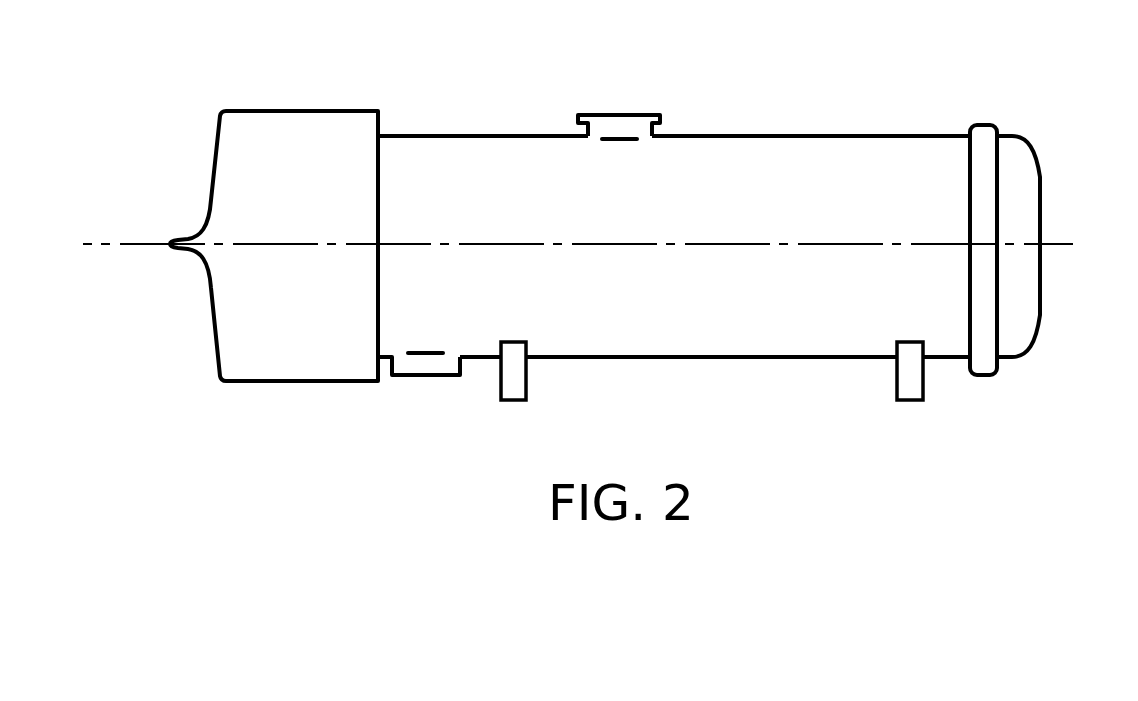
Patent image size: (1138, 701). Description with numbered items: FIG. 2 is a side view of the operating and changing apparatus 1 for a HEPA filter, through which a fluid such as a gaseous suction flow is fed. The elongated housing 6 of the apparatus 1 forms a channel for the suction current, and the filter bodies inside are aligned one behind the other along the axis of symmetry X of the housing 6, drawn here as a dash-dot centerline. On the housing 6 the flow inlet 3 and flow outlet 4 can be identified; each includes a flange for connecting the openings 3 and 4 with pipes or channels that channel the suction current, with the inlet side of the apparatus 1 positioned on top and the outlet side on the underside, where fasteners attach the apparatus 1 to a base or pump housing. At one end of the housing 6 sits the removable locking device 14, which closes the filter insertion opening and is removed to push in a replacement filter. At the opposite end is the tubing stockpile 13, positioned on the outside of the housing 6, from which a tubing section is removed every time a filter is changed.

The operating and changing apparatus 1 is at (601, 241).
The flow inlet 3 is at (427, 372).
The flow outlet 4 is at (625, 125).
The housing 6 is at (762, 142).
The tubing stockpile 13 is at (303, 369).
The locking device 14 is at (1015, 327).
The axis of symmetry X is at (1058, 243).